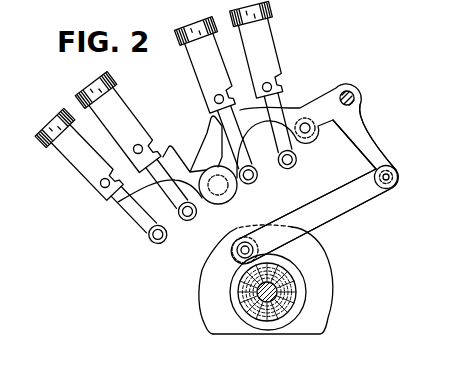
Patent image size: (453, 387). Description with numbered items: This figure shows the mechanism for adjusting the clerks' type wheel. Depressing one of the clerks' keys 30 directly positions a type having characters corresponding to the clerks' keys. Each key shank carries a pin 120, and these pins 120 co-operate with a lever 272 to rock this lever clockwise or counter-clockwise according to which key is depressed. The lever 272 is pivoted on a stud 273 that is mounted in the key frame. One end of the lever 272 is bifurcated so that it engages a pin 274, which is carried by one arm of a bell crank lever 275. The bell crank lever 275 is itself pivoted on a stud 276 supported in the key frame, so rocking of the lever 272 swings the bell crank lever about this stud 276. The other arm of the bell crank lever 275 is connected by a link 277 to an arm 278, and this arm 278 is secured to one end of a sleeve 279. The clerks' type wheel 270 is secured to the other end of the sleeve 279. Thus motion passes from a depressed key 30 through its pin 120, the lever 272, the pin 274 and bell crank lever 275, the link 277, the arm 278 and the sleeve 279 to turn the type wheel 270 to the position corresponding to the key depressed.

The clerks' keys 30 is at (70, 93).
The pins 120 is at (140, 146).
The clerks' type wheel 270 is at (329, 268).
The lever 272 is at (288, 110).
The stud 273 is at (214, 168).
The pin 274 is at (312, 131).
The bell crank lever 275 is at (361, 124).
The stud 276 is at (354, 99).
The link 277 is at (356, 206).
The arm 278 is at (284, 262).
The sleeve 279 is at (297, 299).